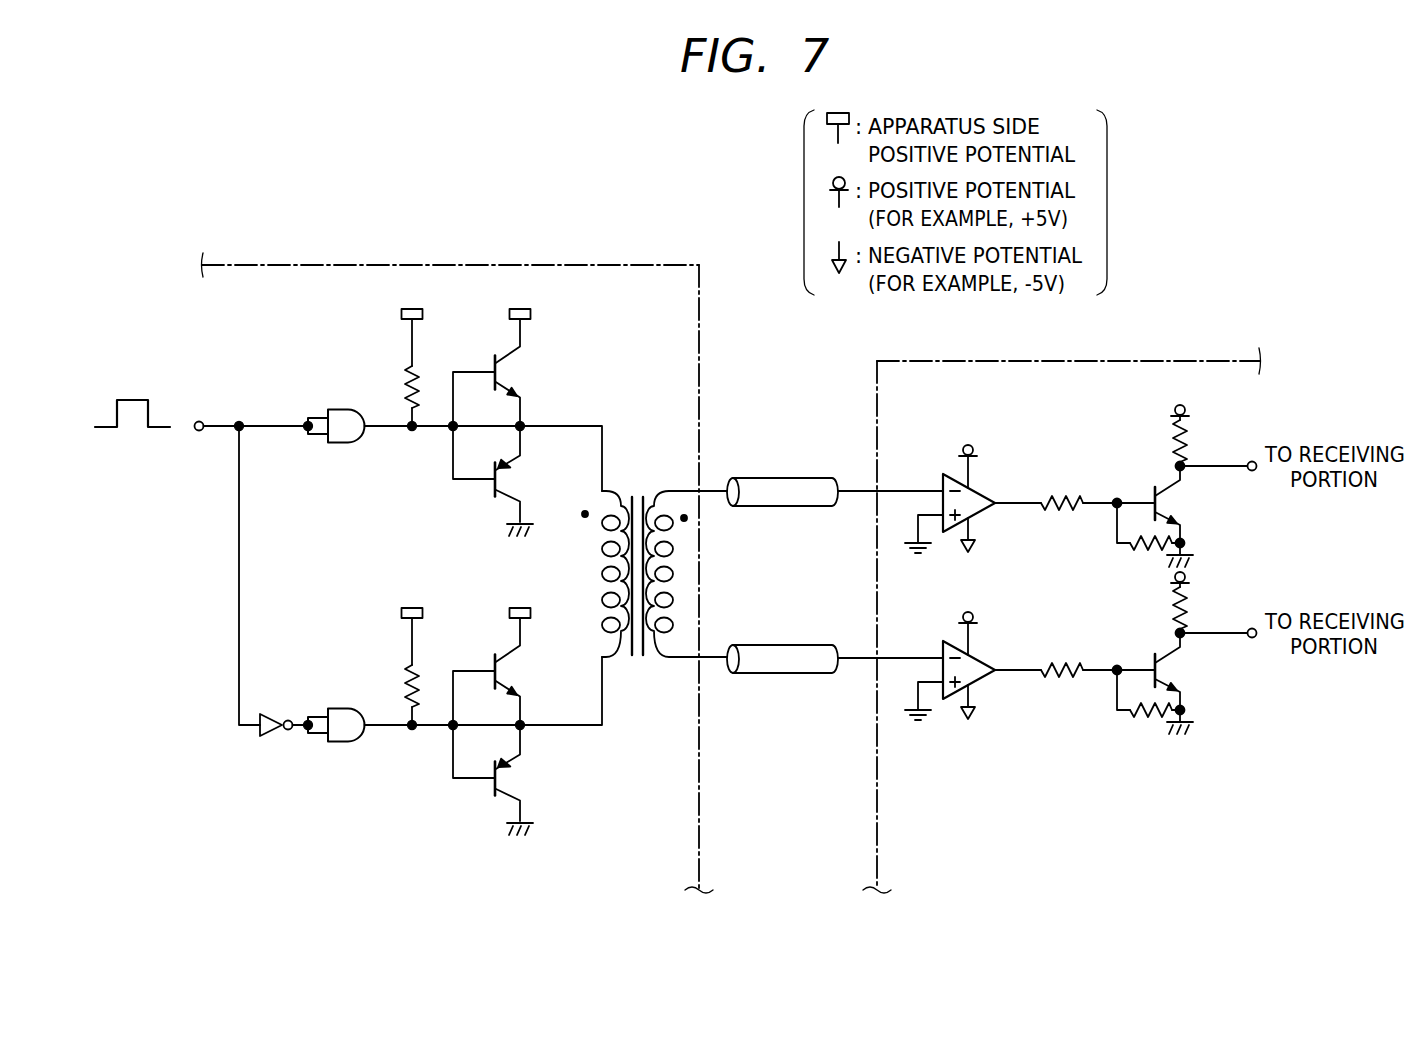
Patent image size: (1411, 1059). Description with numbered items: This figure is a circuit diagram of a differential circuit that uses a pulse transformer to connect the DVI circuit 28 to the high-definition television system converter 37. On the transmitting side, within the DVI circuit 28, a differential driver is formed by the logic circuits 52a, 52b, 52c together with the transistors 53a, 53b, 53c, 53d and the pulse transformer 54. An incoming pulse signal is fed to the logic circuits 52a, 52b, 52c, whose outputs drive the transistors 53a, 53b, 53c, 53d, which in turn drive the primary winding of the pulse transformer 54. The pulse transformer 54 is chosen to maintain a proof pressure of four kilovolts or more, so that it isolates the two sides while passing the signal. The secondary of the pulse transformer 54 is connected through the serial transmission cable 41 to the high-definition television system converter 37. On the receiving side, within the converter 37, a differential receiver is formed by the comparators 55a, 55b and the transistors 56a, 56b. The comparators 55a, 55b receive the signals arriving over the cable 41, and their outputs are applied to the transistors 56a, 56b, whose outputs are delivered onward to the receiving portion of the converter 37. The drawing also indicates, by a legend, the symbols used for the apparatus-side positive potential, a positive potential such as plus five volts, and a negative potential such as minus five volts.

The DVI circuit 28 is at (312, 265).
The high-definition television system converter 37 is at (1190, 361).
The serial transmission cable 41 is at (787, 478).
The logic circuit 52a is at (340, 410).
The logic circuit 52b is at (270, 740).
The logic circuit 52c is at (340, 709).
The transistor 53a is at (520, 372).
The transistor 53b is at (520, 478).
The transistor 53c is at (520, 671).
The transistor 53d is at (520, 777).
The pulse transformer 54 is at (638, 491).
The comparator 55a is at (980, 485).
The comparator 55b is at (980, 652).
The transistor 56a is at (1178, 506).
The transistor 56b is at (1178, 673).